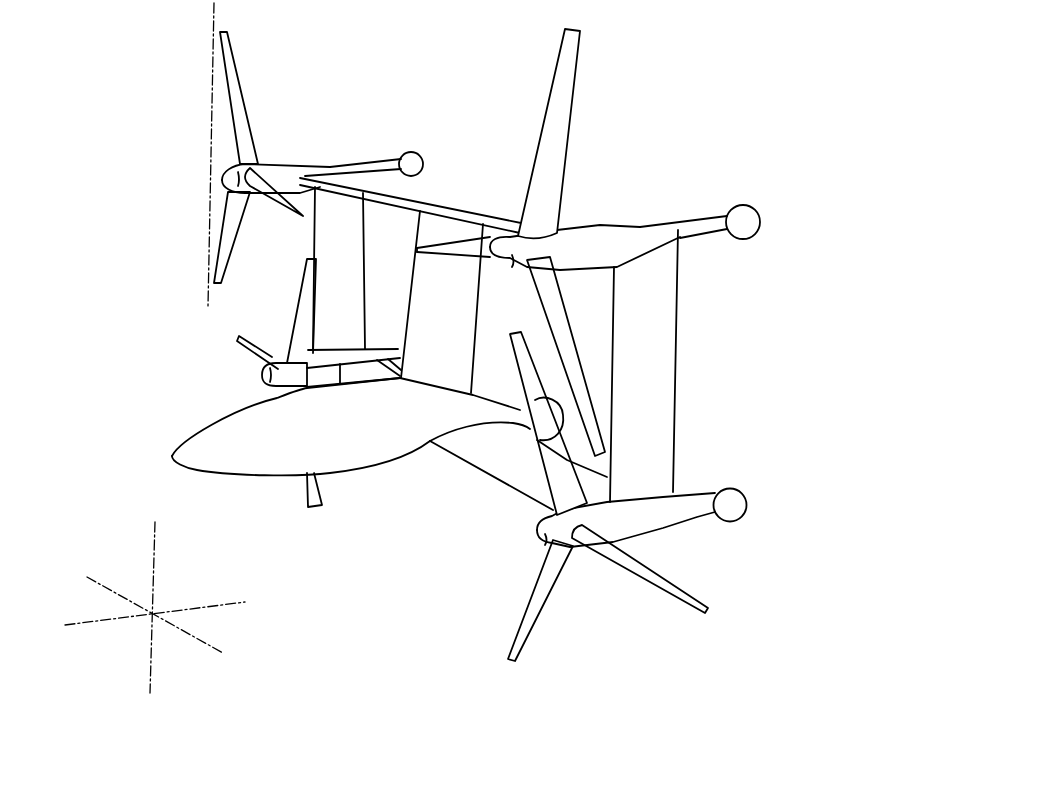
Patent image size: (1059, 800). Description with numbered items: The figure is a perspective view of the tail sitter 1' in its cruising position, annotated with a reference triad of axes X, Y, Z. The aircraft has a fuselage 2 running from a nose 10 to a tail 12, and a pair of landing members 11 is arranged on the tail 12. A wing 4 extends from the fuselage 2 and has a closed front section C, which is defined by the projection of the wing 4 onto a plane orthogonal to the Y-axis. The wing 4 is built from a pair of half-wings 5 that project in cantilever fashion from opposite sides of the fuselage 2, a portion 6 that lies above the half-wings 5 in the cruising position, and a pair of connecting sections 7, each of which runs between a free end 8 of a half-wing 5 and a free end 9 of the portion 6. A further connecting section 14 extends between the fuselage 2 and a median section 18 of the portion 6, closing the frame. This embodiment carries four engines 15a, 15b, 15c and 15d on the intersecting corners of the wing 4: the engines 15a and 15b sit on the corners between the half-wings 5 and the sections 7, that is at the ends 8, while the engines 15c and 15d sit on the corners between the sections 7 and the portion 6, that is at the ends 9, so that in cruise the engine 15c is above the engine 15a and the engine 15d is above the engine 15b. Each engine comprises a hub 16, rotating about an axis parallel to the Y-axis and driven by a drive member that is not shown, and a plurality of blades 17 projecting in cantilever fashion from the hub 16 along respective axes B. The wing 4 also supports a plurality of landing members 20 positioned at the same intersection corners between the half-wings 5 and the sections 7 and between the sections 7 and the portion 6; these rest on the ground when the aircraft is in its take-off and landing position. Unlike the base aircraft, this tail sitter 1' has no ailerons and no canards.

The tail sitter 1' is at (476, 353).
The fuselage 2 is at (303, 433).
The wing 4 is at (460, 164).
The half-wings 5 is at (487, 438).
The portion 6 is at (503, 215).
The connecting sections 7 is at (362, 212).
The free ends of the half-wings 8 is at (342, 350).
The free ends of portion 9 is at (329, 165).
The nose 10 is at (268, 461).
The landing members 11 is at (530, 398).
The tail 12 is at (513, 432).
The further connecting section 14 is at (452, 393).
The engine 15a is at (205, 325).
The engine 15b is at (580, 620).
The engine 15c is at (307, 110).
The engine 15d is at (526, 52).
The hub 16 is at (230, 178).
The blades 17 is at (229, 105).
The median section 18 is at (413, 182).
The landing members 20 is at (413, 152).
The axes B is at (214, 12).
The front section C is at (548, 143).
The X axis X is at (87, 577).
The Y-axis Y is at (70, 628).
The Z axis Z is at (160, 530).